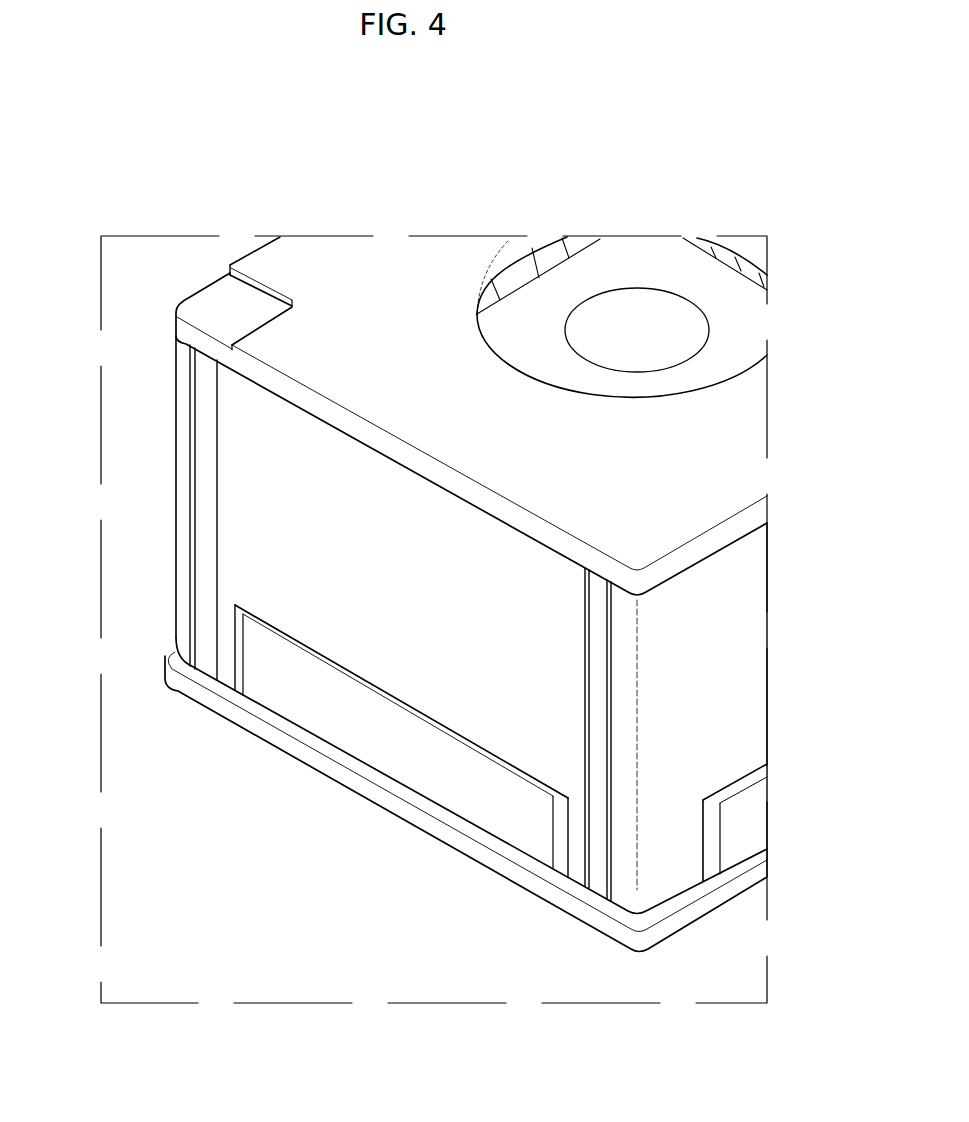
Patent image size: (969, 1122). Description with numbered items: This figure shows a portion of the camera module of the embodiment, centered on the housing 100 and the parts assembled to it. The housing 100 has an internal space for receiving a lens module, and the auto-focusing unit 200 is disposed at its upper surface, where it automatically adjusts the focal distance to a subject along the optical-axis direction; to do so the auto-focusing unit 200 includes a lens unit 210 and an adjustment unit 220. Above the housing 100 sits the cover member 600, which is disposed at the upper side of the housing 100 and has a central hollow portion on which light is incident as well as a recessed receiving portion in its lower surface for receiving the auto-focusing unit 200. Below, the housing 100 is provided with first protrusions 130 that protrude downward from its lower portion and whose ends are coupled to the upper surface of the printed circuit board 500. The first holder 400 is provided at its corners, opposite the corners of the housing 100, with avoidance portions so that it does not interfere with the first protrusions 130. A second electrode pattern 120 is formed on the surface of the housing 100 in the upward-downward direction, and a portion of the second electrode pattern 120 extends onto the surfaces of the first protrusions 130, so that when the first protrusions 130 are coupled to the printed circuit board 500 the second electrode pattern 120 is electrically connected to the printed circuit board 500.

The housing 100 is at (715, 681).
The second electrode pattern 120 is at (205, 597).
The first protrusions 130 is at (227, 650).
The auto-focusing unit 200 is at (610, 180).
The lens unit 210 is at (628, 328).
The adjustment unit 220 is at (712, 290).
The first holder 400 is at (485, 800).
The printed circuit board 500 is at (388, 793).
The cover member 600 is at (715, 433).